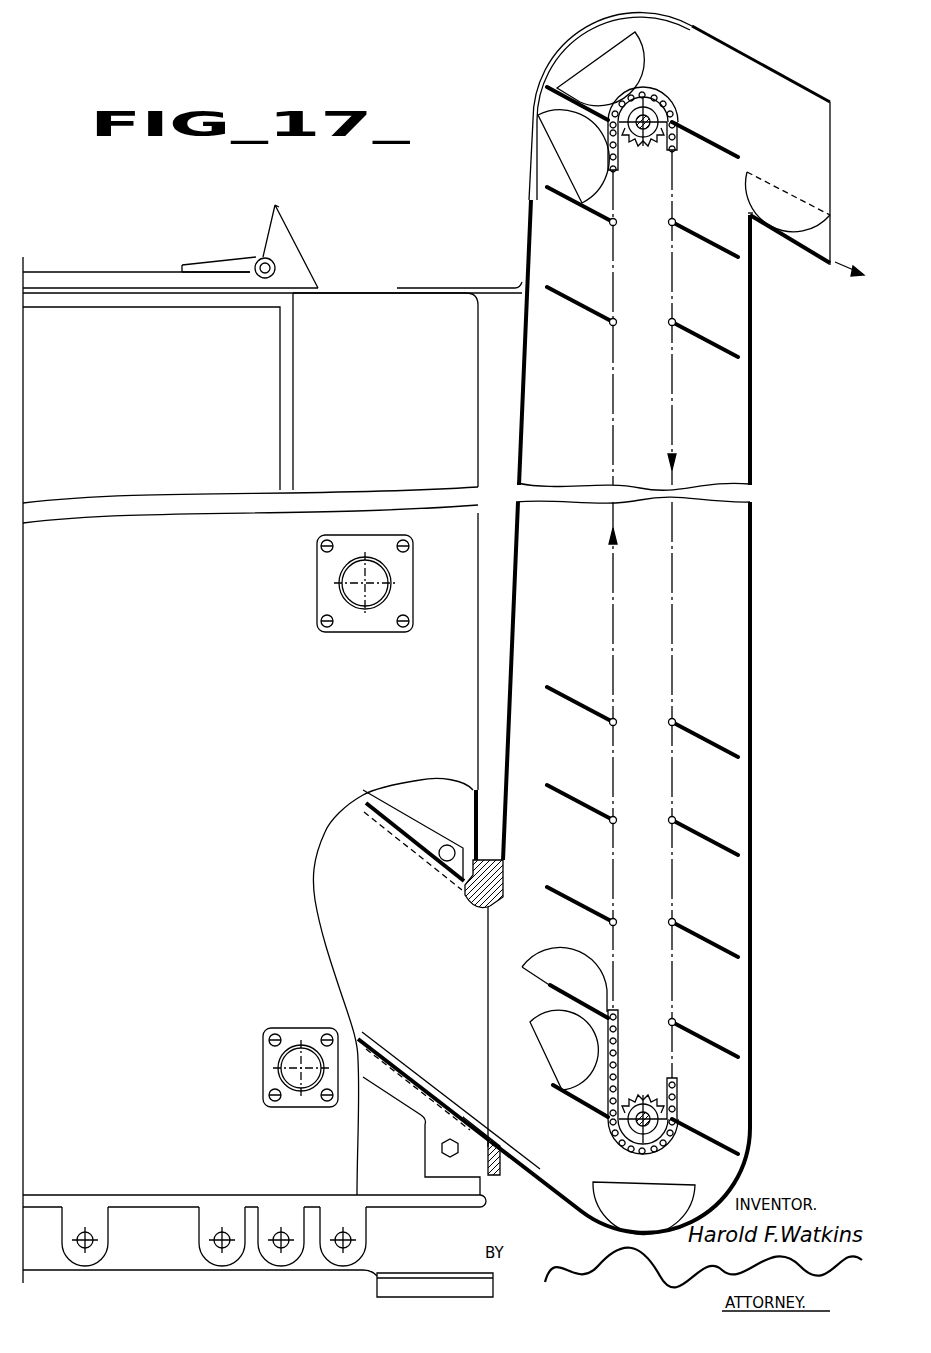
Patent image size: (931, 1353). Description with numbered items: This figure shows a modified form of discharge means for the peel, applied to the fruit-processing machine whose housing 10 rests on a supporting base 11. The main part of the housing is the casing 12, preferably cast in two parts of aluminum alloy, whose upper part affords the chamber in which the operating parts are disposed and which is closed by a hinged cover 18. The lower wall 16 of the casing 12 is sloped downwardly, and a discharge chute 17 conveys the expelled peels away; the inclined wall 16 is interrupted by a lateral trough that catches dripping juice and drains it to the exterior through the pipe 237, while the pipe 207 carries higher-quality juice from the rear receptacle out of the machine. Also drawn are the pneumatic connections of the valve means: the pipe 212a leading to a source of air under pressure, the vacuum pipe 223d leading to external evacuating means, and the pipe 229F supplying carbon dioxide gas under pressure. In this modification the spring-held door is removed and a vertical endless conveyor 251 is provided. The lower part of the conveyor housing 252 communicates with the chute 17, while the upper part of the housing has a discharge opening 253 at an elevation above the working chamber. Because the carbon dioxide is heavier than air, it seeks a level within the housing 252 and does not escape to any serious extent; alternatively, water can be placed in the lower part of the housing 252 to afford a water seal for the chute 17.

The housing 10 is at (192, 752).
The supporting base 11 is at (158, 1258).
The casing 12 is at (420, 827).
The lower wall 16 is at (364, 1035).
The discharge chute 17 is at (413, 1082).
The hinged cover 18 is at (122, 271).
The pipe 207 is at (340, 576).
The pipe 237 is at (280, 1061).
The pipe 212a is at (87, 1233).
The vacuum pipe 223d is at (222, 1233).
The pipe 229F is at (284, 1233).
The vertical endless conveyor 251 is at (684, 86).
The conveyor housing 252 is at (756, 665).
The discharge opening 253 is at (796, 110).